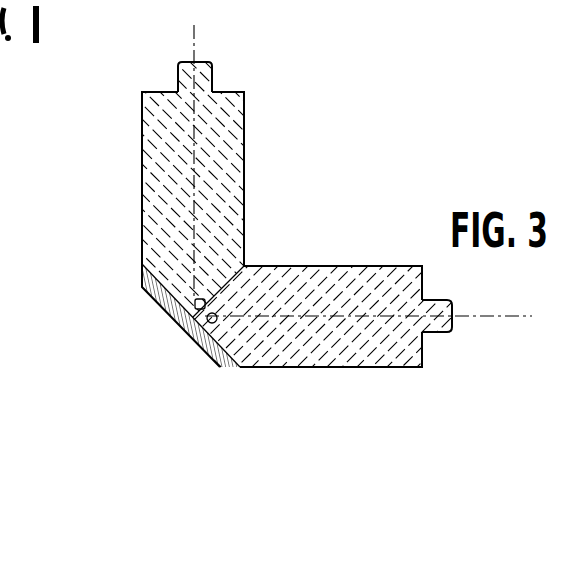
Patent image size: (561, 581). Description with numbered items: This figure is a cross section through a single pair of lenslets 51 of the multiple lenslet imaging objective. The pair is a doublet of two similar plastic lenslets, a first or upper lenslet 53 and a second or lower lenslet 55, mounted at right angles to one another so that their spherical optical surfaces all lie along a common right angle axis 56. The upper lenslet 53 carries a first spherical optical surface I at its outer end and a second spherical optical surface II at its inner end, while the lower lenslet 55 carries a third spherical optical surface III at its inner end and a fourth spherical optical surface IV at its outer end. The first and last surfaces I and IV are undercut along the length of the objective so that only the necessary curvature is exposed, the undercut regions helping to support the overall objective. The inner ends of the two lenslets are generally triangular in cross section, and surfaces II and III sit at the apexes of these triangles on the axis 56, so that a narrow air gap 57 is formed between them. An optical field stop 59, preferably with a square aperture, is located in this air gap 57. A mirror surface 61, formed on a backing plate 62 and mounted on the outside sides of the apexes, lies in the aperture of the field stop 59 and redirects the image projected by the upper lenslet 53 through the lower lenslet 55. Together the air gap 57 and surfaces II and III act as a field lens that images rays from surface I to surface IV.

The pair of lenslets 51 is at (263, 194).
The first lenslet 53 is at (245, 96).
The second lenslet 55 is at (388, 272).
The right angle axis 56 is at (492, 318).
The air gap 57 is at (192, 302).
The optical field stop 59 is at (205, 339).
The mirror surface 61 is at (187, 325).
The backing plate 62 is at (218, 367).
The first spherical optical surface I is at (195, 60).
The second spherical optical surface II is at (197, 300).
The third spherical optical surface III is at (213, 310).
The fourth spherical optical surface IV is at (454, 322).